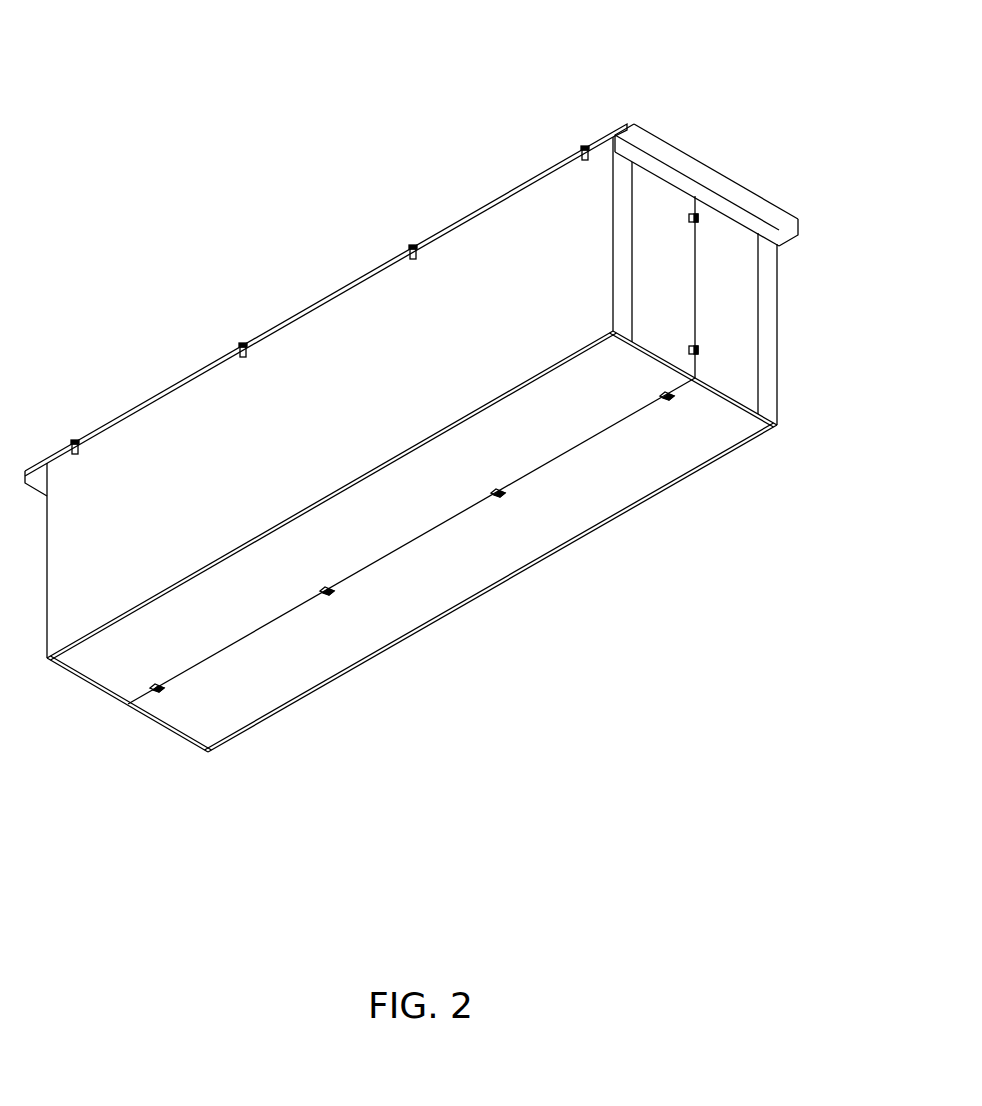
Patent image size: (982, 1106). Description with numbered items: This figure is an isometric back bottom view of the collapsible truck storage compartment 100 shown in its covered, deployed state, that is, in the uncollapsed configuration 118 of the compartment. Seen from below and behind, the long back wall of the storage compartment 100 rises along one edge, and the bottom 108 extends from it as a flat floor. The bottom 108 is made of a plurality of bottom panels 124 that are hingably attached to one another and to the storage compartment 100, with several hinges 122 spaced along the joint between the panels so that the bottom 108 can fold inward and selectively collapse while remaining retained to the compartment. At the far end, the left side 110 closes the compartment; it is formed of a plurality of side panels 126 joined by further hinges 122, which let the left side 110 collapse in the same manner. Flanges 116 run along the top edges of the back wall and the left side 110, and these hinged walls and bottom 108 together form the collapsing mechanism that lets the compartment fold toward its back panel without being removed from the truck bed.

The storage compartment 100 is at (231, 54).
The bottom 108 is at (568, 511).
The left side 110 is at (742, 337).
The flange 116 is at (30, 472).
The uncollapsed configuration 118 is at (280, 254).
The hinges 122 is at (410, 240).
The bottom panels 124 is at (363, 642).
The side panels 126 is at (653, 197).